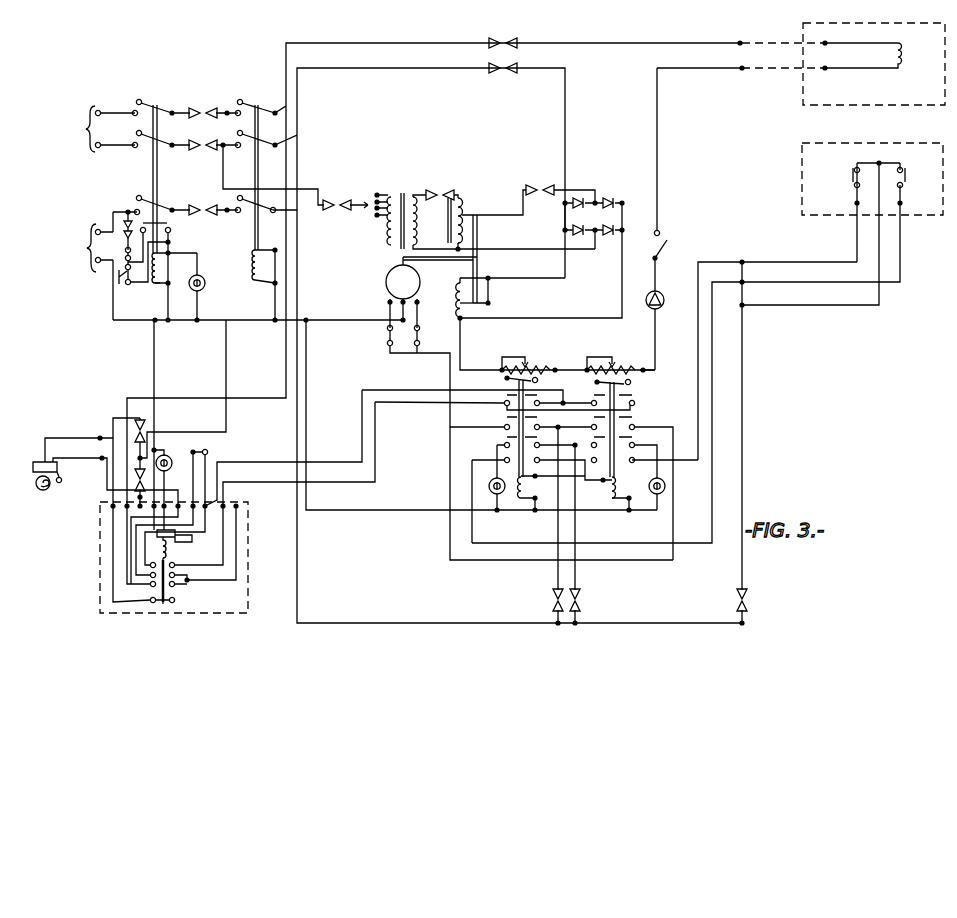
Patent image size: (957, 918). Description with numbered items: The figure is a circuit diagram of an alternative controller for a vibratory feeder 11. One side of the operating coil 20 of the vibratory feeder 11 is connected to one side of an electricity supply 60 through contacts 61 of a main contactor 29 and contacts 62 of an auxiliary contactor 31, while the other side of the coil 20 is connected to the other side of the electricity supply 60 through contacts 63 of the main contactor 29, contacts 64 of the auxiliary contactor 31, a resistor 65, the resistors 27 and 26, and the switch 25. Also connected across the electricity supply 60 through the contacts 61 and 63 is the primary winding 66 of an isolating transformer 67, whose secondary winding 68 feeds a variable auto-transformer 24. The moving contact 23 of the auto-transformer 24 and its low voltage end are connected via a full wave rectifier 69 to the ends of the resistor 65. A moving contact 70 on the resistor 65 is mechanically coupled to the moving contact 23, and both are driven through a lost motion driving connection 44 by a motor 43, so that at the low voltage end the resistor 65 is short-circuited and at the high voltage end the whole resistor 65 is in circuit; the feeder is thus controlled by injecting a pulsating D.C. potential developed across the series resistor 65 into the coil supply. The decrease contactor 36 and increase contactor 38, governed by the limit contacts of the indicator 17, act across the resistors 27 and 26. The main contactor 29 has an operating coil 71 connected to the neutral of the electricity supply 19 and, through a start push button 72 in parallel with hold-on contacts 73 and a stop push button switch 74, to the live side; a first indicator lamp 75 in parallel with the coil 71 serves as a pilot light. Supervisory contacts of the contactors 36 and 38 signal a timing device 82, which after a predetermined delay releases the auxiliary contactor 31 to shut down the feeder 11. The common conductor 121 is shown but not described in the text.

The electricity supply 60 is at (105, 129).
The contacts of main contactor 61 is at (158, 108).
The contacts of auxiliary contactor 62 is at (258, 108).
The contacts of main contactor 63 is at (164, 138).
The contacts of auxiliary contactor 64 is at (258, 138).
The electricity supply 19 is at (91, 248).
The stop push button switch 74 is at (122, 252).
The hold-on contacts 73 is at (170, 223).
The start push button 72 is at (117, 281).
The operating coil 71 is at (155, 286).
The main contactor 29 is at (186, 274).
The first indicator lamp 75 is at (206, 279).
The auxiliary contactor 31 is at (281, 274).
The common conductor 121 is at (137, 324).
The primary winding 66 is at (386, 233).
The isolating transformer 67 is at (403, 193).
The secondary winding 68 is at (416, 214).
The variable auto-transformer 24 is at (447, 195).
The moving contact 23 is at (461, 200).
The lost motion driving connection 44 is at (444, 262).
The motor 43 is at (403, 282).
The resistor 65 is at (456, 310).
The moving contact 70 is at (478, 311).
The full wave rectifier 69 is at (593, 216).
The switch 25 is at (668, 241).
The operating coil 20 is at (903, 62).
The vibratory feeder 11 is at (836, 106).
The indicator 17 is at (800, 175).
The resistor 27 is at (536, 364).
The resistor 26 is at (624, 364).
The decrease contactor 36 is at (552, 495).
The increase contactor 38 is at (641, 490).
The timing device 82 is at (248, 553).